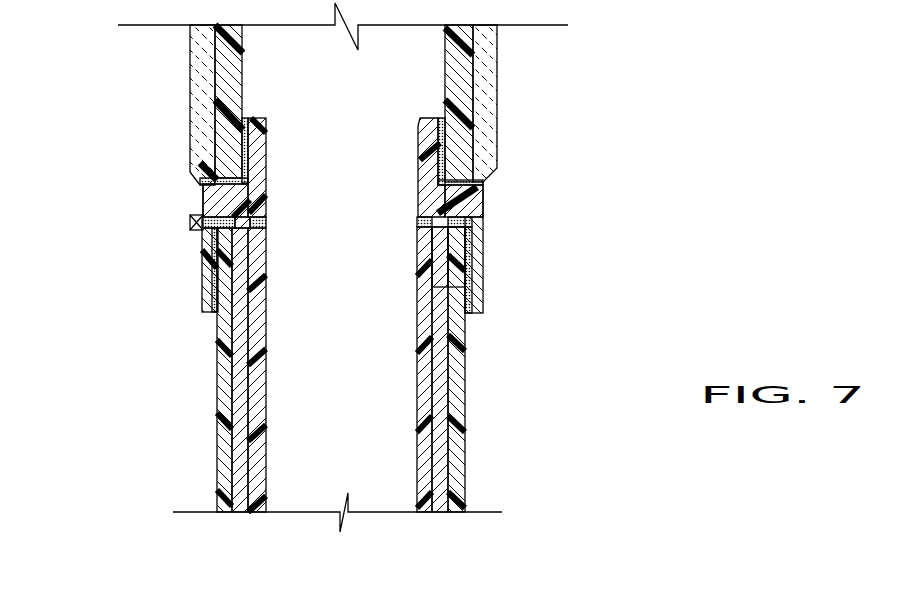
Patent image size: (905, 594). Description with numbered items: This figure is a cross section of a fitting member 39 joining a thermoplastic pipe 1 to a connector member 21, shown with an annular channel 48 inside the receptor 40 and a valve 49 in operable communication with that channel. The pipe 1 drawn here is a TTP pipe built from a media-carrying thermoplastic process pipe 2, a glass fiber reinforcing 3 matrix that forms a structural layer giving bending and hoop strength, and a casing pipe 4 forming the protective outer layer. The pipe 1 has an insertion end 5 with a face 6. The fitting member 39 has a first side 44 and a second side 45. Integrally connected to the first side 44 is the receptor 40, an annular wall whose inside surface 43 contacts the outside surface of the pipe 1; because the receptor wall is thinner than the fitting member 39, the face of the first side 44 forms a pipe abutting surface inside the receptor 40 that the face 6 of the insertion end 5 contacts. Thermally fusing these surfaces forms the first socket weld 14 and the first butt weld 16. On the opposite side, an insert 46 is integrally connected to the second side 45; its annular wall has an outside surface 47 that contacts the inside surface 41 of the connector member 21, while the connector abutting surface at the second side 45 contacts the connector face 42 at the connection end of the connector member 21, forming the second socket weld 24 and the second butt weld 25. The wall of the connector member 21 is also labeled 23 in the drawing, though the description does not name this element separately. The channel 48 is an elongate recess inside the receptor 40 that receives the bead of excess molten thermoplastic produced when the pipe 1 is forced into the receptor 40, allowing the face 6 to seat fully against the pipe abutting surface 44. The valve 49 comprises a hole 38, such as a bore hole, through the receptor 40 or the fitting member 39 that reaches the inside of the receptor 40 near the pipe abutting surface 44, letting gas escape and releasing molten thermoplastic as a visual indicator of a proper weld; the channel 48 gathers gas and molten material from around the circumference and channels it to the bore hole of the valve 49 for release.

The pipe 1 is at (128, 461).
The process pipe 2 is at (423, 445).
The glass fiber reinforcing 3 is at (448, 413).
The casing pipe 4 is at (455, 490).
The insertion end 5 is at (432, 247).
The face 6 is at (250, 225).
The first socket weld 14 is at (217, 315).
The first butt weld 16 is at (222, 238).
The connector member 21 is at (228, 97).
The upper wall 23 is at (490, 57).
The second socket weld 24 is at (440, 130).
The second butt weld 25 is at (480, 185).
The hole 38 is at (200, 212).
The fitting member 39 is at (468, 202).
The receptor 40 is at (478, 270).
The inside surface 41 is at (445, 80).
The connector face 42 is at (465, 133).
The inside surface 43 is at (452, 296).
The first side 44 is at (240, 217).
The second side 45 is at (203, 195).
The insert 46 is at (260, 135).
The outside surface 47 is at (438, 173).
The annular channel 48 is at (205, 232).
The valve 49 is at (190, 222).